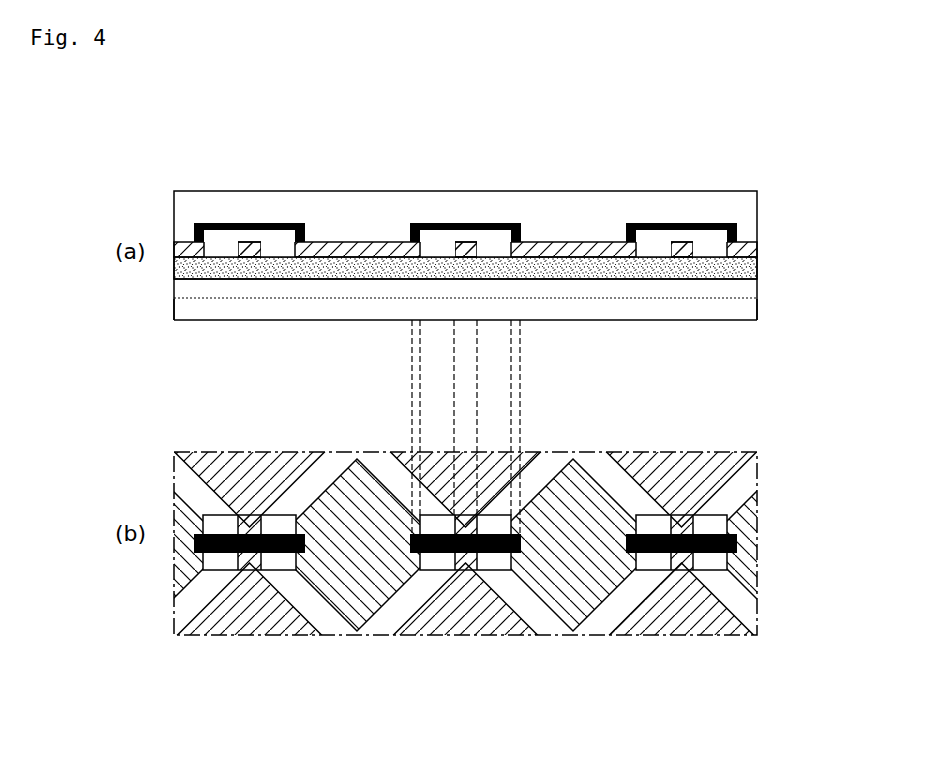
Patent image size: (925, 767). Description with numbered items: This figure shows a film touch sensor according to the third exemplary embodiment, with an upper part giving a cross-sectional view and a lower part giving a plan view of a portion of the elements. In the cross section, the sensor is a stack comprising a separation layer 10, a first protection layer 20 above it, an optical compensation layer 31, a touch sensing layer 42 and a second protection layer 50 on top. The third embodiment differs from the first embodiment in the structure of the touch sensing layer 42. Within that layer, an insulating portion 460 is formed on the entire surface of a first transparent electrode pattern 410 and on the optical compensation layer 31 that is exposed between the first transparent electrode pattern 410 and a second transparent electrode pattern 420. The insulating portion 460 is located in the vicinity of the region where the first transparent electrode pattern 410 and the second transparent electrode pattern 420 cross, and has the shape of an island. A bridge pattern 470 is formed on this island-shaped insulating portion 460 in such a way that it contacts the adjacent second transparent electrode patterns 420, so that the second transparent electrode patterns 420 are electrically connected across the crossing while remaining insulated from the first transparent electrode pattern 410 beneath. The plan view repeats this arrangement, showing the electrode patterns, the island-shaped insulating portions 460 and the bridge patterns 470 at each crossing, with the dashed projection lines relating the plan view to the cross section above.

The touch sensing layer 42 is at (650, 125).
The first transparent electrode pattern 410 is at (462, 243).
The second transparent electrode pattern 420 is at (572, 248).
The insulating portion 460 is at (497, 240).
The bridge pattern 470 is at (478, 223).
The second protection layer 50 is at (748, 208).
The optical compensation layer 31 is at (748, 262).
The first protection layer 20 is at (748, 285).
The separation layer 10 is at (748, 308).